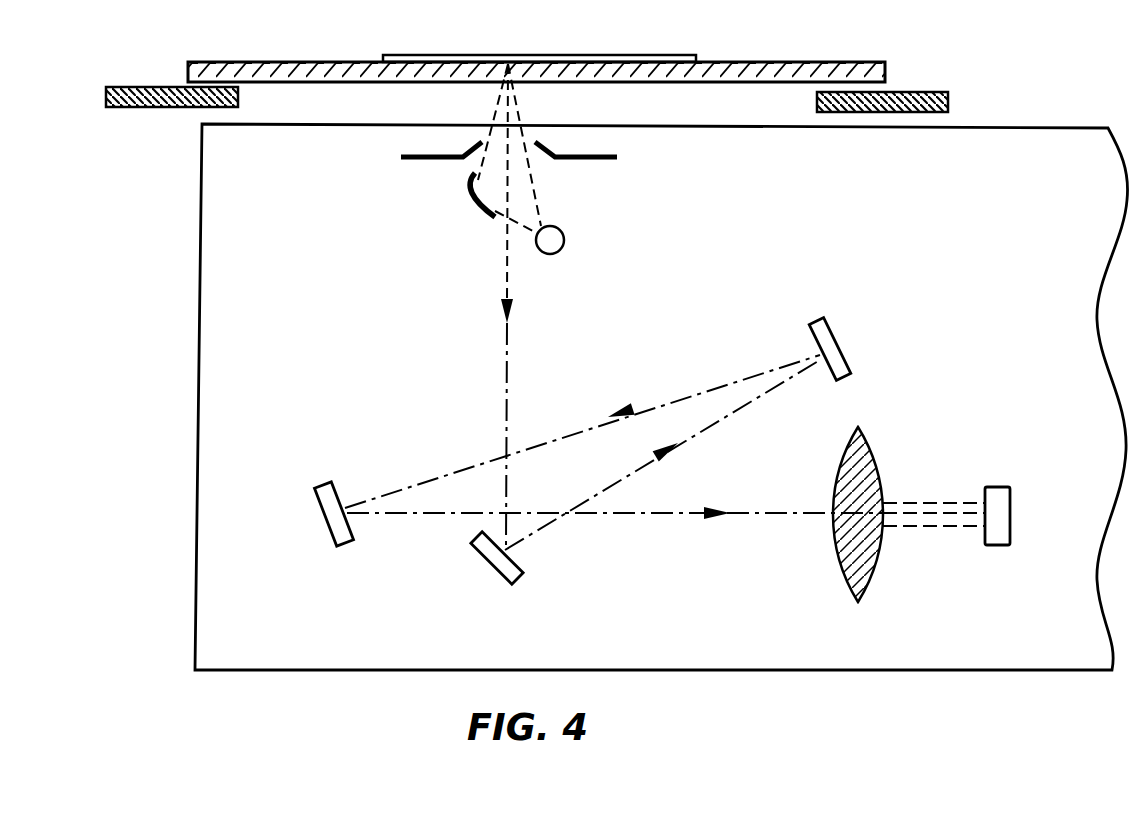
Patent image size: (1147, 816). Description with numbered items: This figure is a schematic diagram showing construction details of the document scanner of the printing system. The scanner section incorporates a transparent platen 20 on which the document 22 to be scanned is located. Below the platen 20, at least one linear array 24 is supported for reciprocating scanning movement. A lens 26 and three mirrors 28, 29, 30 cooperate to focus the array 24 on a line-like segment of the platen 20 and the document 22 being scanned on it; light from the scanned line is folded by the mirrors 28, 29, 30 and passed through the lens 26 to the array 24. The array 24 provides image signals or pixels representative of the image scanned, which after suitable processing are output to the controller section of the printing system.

The transparent platen 20 is at (302, 83).
The document 22 is at (590, 55).
The linear array 24 is at (997, 487).
The lens 26 is at (871, 564).
The mirror 28 is at (488, 573).
The mirror 29 is at (840, 348).
The mirror 30 is at (325, 522).